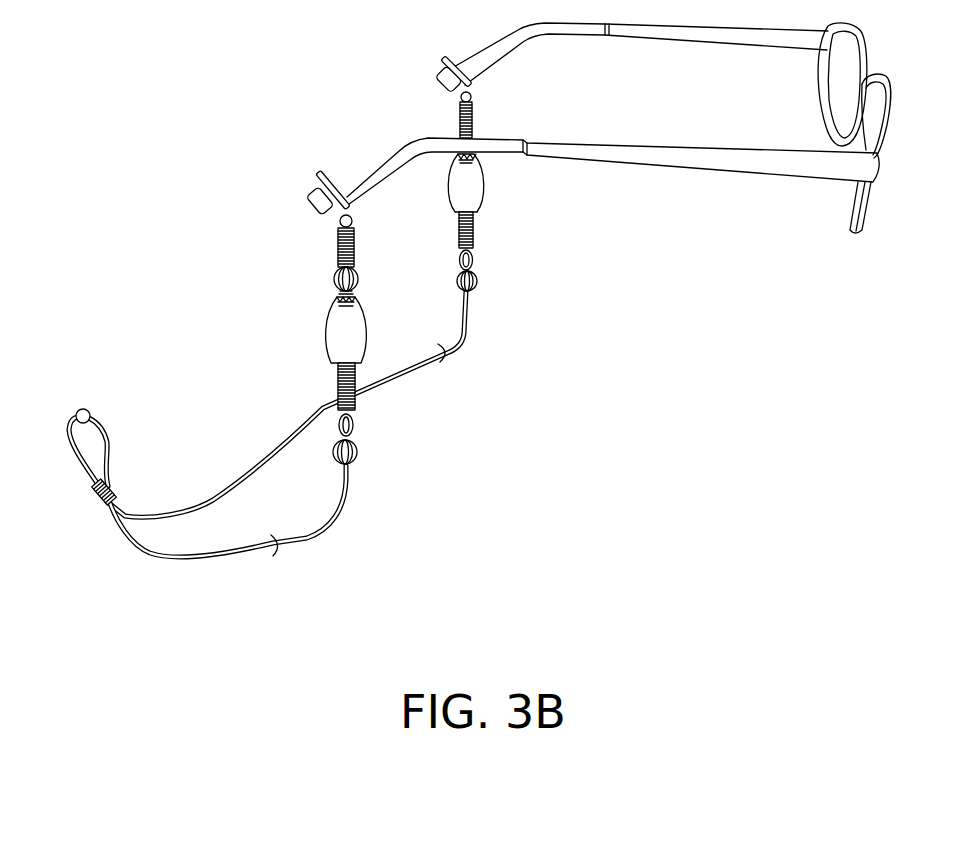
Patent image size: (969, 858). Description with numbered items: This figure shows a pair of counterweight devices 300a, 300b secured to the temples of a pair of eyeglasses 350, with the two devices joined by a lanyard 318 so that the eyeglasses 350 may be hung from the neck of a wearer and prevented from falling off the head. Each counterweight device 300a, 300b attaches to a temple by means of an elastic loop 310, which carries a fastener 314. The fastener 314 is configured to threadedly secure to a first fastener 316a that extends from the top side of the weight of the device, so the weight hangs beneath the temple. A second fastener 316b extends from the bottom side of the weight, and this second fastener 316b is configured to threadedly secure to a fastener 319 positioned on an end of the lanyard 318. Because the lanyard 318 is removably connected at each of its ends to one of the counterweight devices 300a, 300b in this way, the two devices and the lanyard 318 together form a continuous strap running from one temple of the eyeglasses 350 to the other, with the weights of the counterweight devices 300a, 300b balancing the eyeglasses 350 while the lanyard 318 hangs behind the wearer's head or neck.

The pair of eyeglasses 350 is at (703, 163).
The elastic loop 310 is at (443, 72).
The fastener 314 is at (458, 108).
The first fastener 316a is at (473, 128).
The second fastener 316b is at (475, 222).
The counterweight device 300a is at (463, 185).
The counterweight device 300b is at (343, 327).
The fastener 319 is at (475, 237).
The lanyard 318 is at (107, 452).